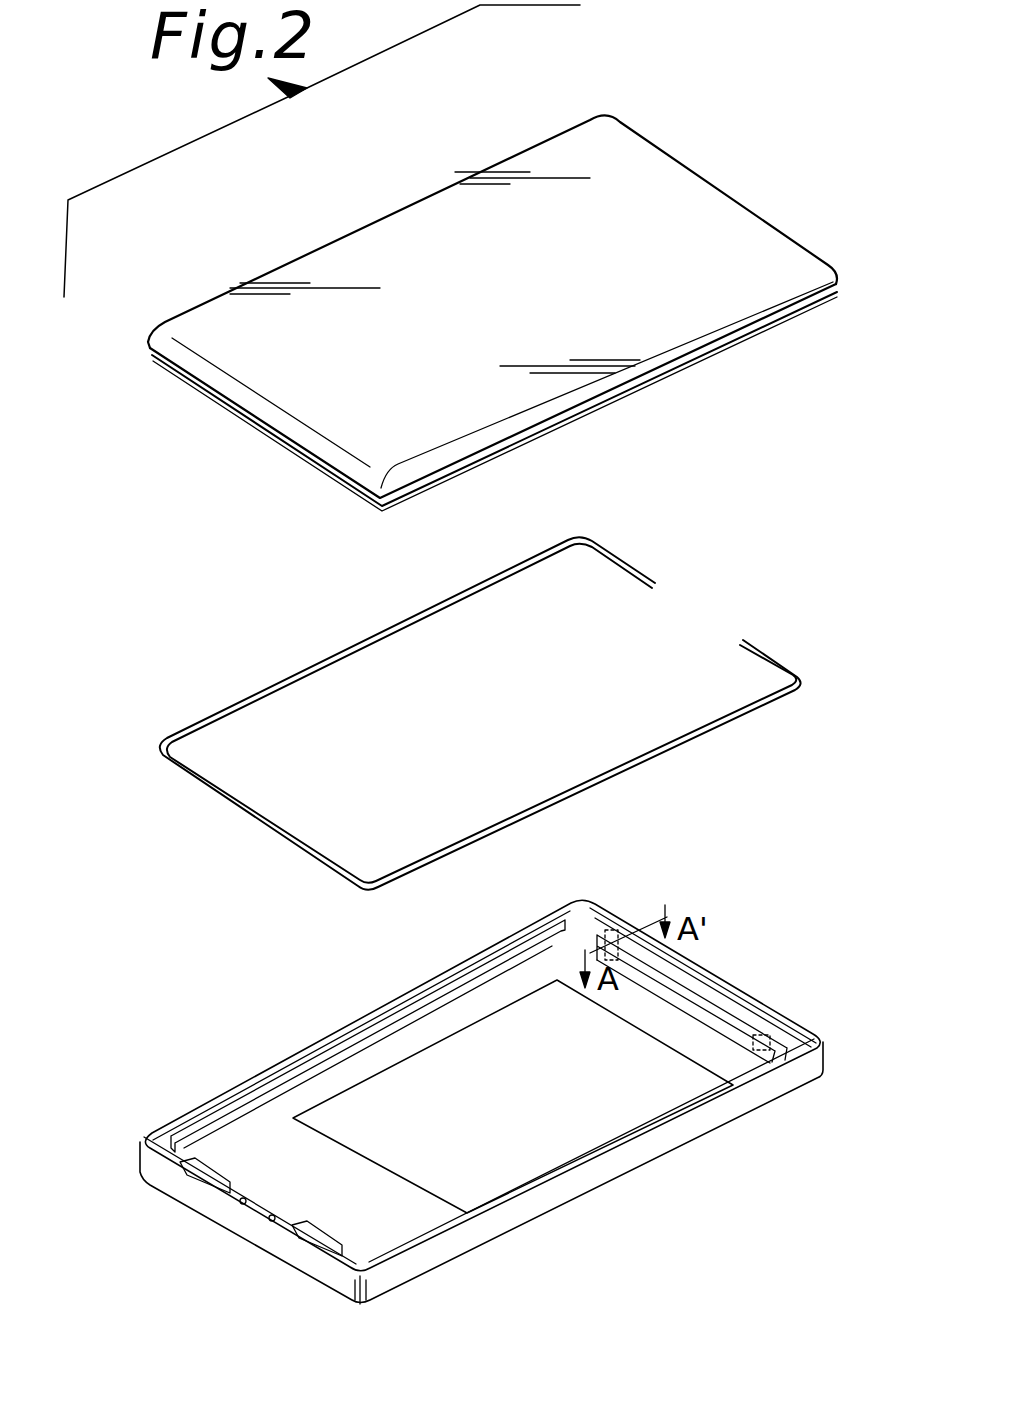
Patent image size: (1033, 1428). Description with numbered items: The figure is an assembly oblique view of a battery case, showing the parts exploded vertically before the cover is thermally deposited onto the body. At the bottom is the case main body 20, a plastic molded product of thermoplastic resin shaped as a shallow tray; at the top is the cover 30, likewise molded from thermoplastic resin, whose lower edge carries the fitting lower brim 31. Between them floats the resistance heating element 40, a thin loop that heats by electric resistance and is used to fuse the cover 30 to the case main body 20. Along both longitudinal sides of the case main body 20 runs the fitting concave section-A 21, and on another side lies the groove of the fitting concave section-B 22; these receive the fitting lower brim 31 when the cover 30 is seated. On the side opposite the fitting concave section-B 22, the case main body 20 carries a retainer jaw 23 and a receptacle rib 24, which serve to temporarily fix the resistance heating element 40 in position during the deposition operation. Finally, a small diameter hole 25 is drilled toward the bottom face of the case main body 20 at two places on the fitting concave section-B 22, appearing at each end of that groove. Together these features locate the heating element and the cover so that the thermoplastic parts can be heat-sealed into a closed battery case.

The case main body 20 is at (643, 1157).
The fitting concave section-A 21 is at (313, 1042).
The fitting concave section-B 22 is at (733, 1007).
The retainer jaw 23 is at (313, 1245).
The receptacle rib 24 is at (272, 1220).
The small diameter hole 25 is at (757, 1043).
The cover 30 is at (360, 250).
The fitting lower brim 31 is at (772, 320).
The resistance heating element 40 is at (777, 657).